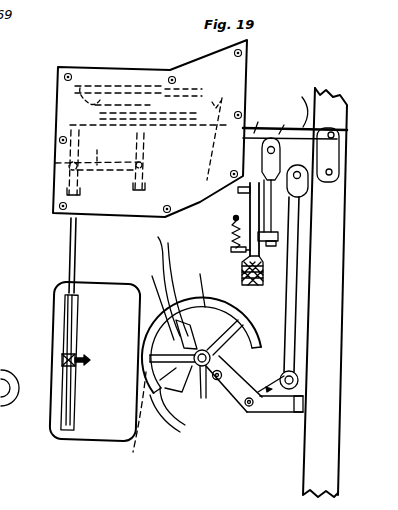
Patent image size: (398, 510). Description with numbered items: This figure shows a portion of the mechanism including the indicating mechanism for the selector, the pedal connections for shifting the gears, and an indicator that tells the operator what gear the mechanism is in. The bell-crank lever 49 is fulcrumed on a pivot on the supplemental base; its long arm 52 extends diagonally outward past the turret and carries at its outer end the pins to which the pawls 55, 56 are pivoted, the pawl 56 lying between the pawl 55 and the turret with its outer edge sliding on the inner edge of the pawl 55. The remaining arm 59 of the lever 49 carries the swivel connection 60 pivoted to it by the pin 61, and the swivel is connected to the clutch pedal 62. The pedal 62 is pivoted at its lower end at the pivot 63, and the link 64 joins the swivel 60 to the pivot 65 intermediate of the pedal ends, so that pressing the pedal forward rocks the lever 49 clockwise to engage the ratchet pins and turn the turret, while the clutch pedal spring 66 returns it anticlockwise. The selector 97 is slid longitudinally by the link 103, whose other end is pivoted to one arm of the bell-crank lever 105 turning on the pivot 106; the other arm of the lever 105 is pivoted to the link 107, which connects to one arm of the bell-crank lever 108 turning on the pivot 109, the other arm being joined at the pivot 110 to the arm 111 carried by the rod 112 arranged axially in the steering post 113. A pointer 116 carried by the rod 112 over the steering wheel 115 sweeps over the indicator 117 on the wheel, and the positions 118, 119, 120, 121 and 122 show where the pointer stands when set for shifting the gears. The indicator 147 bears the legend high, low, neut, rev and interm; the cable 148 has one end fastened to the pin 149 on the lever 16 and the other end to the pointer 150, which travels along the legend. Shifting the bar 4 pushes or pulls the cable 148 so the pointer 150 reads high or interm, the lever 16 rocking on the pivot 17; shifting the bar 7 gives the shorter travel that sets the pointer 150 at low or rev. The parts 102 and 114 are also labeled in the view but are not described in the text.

The bar 4 is at (78, 181).
The bar 7 is at (141, 163).
The lever 16 is at (97, 163).
The pivot 17 is at (146, 167).
The bell-crank lever 49 is at (243, 143).
The long arm 52 is at (221, 131).
The pawl 55 is at (128, 90).
The pawl 56 is at (187, 92).
The arm 59 is at (262, 118).
The swivel connection 60 is at (288, 122).
The pin 61 is at (275, 150).
The clutch pedal 62 is at (247, 273).
The pivot 63 is at (253, 205).
The link 64 is at (233, 219).
The pivot 65 is at (274, 241).
The clutch pedal spring 66 is at (233, 231).
The selector 97 is at (98, 121).
The link 102 is at (147, 109).
The link 103 is at (295, 109).
The bell-crank lever 105 is at (330, 129).
The pivot 106 is at (329, 165).
The link 107 is at (297, 280).
The bell-crank lever 108 is at (273, 413).
The pivot 109 is at (248, 407).
The pivot 110 is at (223, 373).
The arm 111 is at (204, 384).
The rod 112 is at (211, 354).
The steering post 113 is at (247, 320).
The bar 114 is at (172, 358).
The steering wheel 115 is at (178, 415).
The pointer 116 is at (166, 426).
The indicator 117 is at (198, 281).
The pointer position 118 is at (185, 322).
The pointer position 119 is at (155, 300).
The pointer position 120 is at (126, 421).
The pointer position 121 is at (161, 289).
The pointer position 122 is at (157, 281).
The indicator 147 is at (53, 300).
The cable 148 is at (70, 253).
The pin 149 is at (62, 166).
The pointer 150 is at (62, 360).